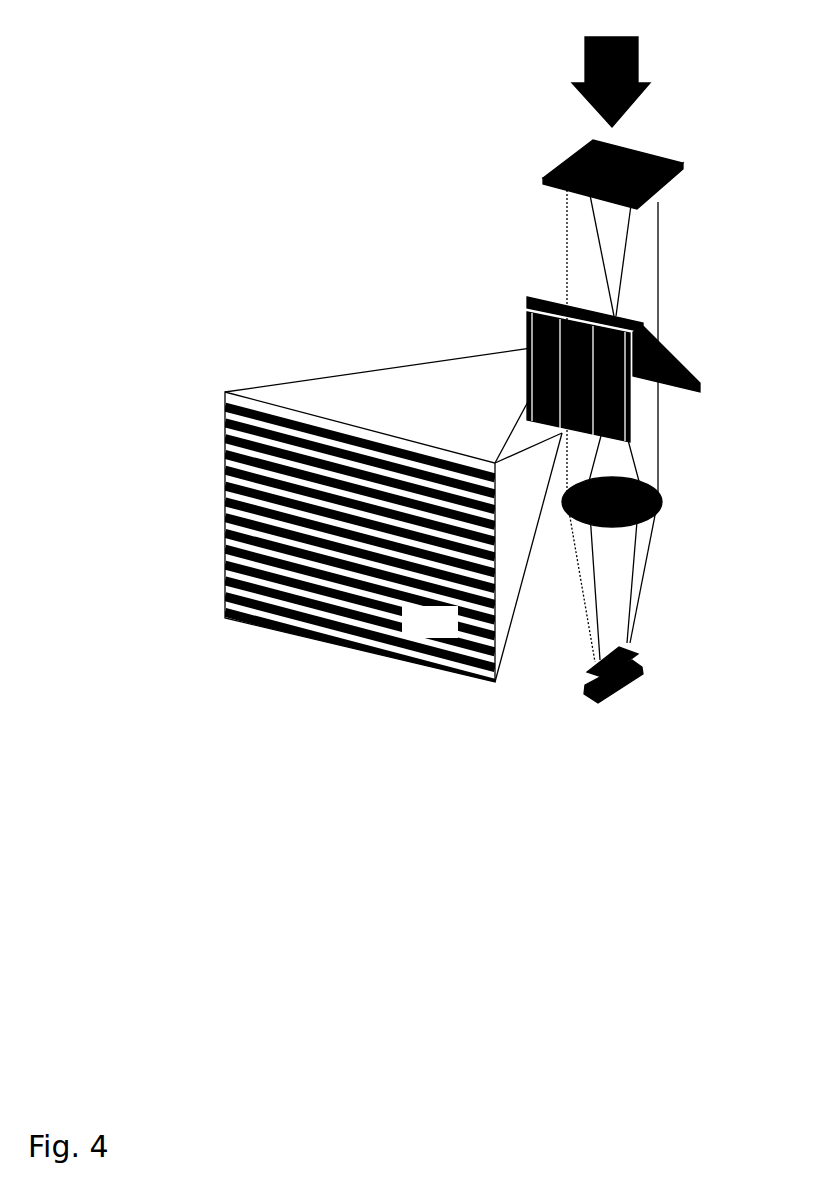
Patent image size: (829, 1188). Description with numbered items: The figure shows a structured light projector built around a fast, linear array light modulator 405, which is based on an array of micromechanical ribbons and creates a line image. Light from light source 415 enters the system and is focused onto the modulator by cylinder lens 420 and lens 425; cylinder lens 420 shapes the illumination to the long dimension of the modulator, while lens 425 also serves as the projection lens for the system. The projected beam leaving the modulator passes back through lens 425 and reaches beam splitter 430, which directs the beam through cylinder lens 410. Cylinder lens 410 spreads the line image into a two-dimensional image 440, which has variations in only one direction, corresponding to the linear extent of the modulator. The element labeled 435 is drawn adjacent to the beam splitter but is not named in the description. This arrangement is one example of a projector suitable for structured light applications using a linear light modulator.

The linear array light modulator 405 is at (647, 660).
The cylinder lens 410 is at (553, 313).
The light source 415 is at (657, 65).
The cylinder lens 420 is at (687, 177).
The lens 425 is at (672, 502).
The beam splitter 430 is at (700, 373).
The light modulator cube 435 is at (527, 334).
The two-dimensional image 440 is at (455, 635).